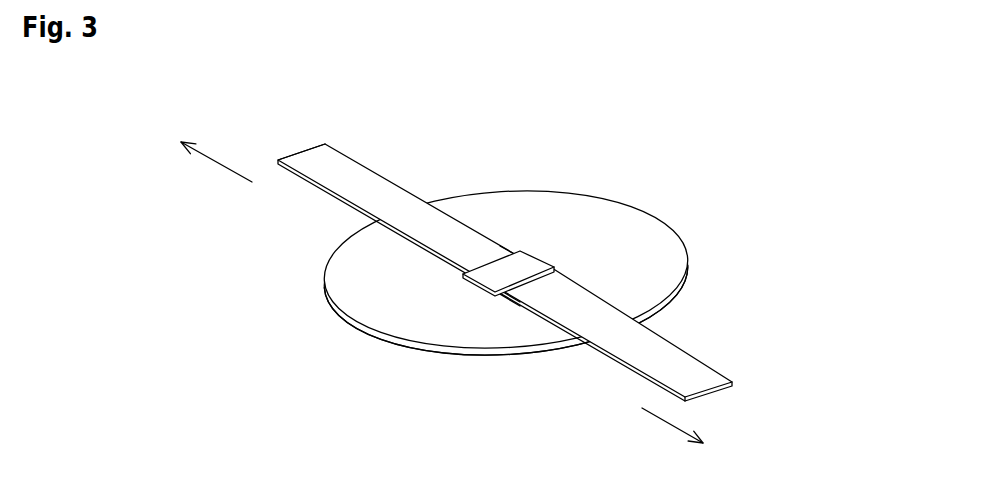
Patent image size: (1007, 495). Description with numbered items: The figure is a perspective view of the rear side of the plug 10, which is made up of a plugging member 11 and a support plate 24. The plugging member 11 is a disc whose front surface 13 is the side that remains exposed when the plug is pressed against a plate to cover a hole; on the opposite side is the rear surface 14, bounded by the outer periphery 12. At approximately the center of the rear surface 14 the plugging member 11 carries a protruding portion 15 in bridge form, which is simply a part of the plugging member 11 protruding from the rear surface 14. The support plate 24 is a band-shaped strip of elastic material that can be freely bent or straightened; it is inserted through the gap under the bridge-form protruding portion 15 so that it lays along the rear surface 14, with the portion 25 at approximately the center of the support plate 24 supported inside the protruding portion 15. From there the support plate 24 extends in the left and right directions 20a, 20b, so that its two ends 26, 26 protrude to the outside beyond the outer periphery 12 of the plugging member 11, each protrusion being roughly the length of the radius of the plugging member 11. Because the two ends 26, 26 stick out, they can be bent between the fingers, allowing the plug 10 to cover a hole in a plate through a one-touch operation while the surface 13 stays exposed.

The plug 10 is at (507, 268).
The plugging member 11 is at (583, 220).
The outer periphery 12 is at (323, 282).
The surface 13 is at (487, 274).
The rear surface 14 is at (360, 300).
The protruding portion 15 is at (517, 265).
The left direction 20a is at (227, 170).
The right direction 20b is at (653, 428).
The support plate 24 is at (554, 267).
The center portion of support plate 25 is at (488, 255).
The ends of support plate 26 is at (303, 151).